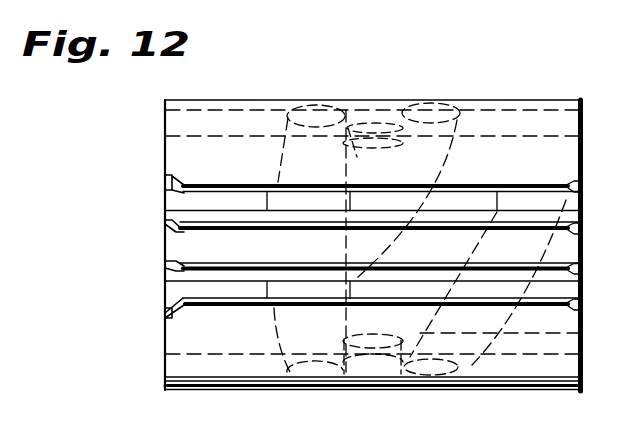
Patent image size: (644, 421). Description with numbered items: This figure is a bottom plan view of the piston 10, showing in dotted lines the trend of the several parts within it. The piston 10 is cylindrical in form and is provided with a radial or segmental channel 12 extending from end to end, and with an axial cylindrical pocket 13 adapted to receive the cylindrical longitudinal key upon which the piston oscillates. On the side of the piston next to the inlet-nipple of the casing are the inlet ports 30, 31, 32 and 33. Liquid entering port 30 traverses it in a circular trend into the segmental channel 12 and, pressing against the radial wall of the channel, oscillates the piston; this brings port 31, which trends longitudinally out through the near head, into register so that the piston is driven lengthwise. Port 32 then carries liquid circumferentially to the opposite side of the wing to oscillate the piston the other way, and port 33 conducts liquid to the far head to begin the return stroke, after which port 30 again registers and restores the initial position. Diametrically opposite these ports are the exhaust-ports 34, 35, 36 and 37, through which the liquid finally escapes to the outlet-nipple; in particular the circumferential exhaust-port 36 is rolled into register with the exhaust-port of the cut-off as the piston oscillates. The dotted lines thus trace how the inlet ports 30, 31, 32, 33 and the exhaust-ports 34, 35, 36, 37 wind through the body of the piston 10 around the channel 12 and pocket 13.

The piston 10 is at (584, 147).
The segmental channel 12 is at (572, 214).
The axial cylindrical pocket 13 is at (167, 247).
The port 30 is at (423, 377).
The port 31 is at (371, 376).
The port 32 is at (300, 374).
The port 33 is at (388, 343).
The exhaust-port 34 is at (447, 104).
The exhaust-port 35 is at (280, 273).
The circumferential exhaust-port 36 is at (344, 105).
The exhaust-port 37 is at (373, 122).